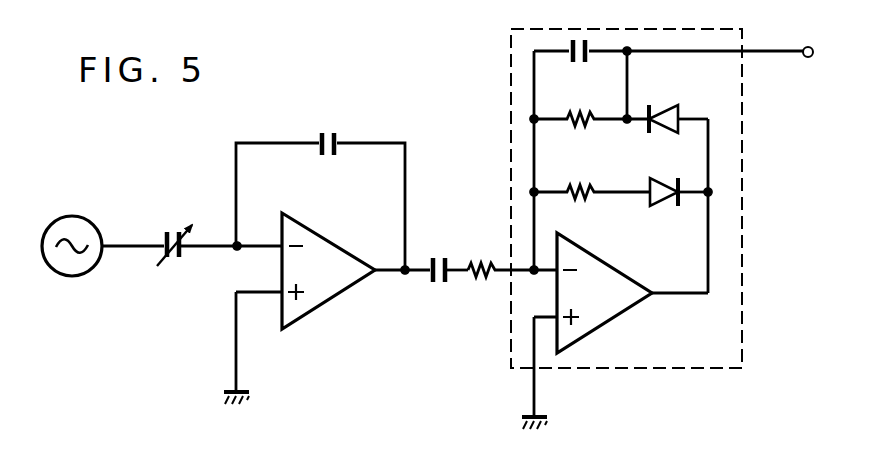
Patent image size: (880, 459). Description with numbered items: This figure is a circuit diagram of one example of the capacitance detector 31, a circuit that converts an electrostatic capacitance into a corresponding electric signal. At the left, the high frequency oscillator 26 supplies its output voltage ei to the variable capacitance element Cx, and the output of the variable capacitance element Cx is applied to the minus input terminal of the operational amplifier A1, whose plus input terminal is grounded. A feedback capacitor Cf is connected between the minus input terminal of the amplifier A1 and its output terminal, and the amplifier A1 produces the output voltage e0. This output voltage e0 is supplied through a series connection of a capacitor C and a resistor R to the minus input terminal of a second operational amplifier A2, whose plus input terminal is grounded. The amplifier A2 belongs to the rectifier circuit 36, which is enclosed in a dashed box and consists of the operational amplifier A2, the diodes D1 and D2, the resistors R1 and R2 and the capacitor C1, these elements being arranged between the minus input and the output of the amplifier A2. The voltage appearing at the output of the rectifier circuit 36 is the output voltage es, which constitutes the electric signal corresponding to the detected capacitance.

The high frequency oscillator 26 is at (82, 277).
The capacitance detector 31 is at (316, 234).
The rectifier circuit 36 is at (511, 89).
The output voltage of the high frequency oscillator ei is at (78, 205).
The variable capacitance element Cx is at (169, 231).
The feedback capacitor Cf is at (340, 116).
The operational amplifier A1 is at (330, 236).
The output voltage of the amplifier A1 e0 is at (406, 267).
The capacitor C is at (439, 284).
The resistor R is at (482, 258).
The capacitor C1 is at (588, 62).
The resistor R2 is at (587, 128).
The resistor R1 is at (583, 203).
The diode D2 is at (663, 96).
The diode D1 is at (664, 207).
The operational amplifier A2 is at (616, 318).
The output voltage of the rectifier circuit es is at (804, 51).